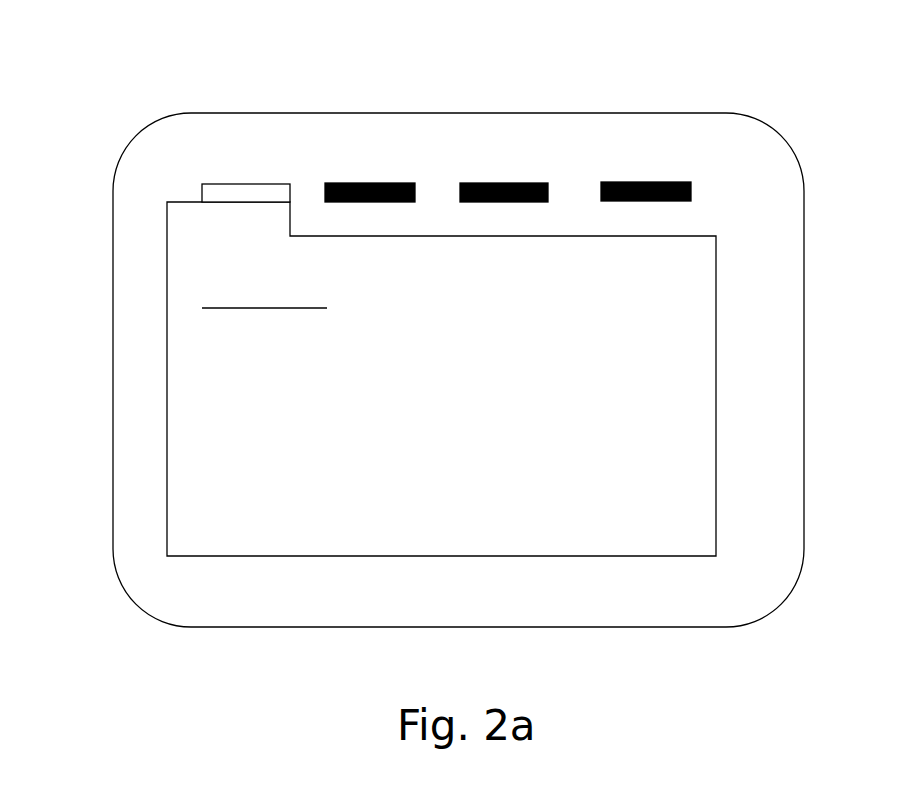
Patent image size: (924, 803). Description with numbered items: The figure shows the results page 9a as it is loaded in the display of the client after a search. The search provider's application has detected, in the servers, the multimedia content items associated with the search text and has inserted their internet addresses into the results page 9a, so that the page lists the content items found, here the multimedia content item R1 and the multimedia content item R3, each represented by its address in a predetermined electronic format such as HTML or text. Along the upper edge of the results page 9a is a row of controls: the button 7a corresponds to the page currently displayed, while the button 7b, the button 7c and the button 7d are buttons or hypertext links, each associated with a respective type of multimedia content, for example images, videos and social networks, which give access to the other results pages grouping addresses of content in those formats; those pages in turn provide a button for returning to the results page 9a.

The button 7a is at (219, 183).
The button 7b is at (361, 183).
The button 7c is at (502, 183).
The button 7d is at (660, 182).
The results page 9a is at (697, 306).
The multimedia content item R1 is at (264, 287).
The multimedia content item R3 is at (222, 374).